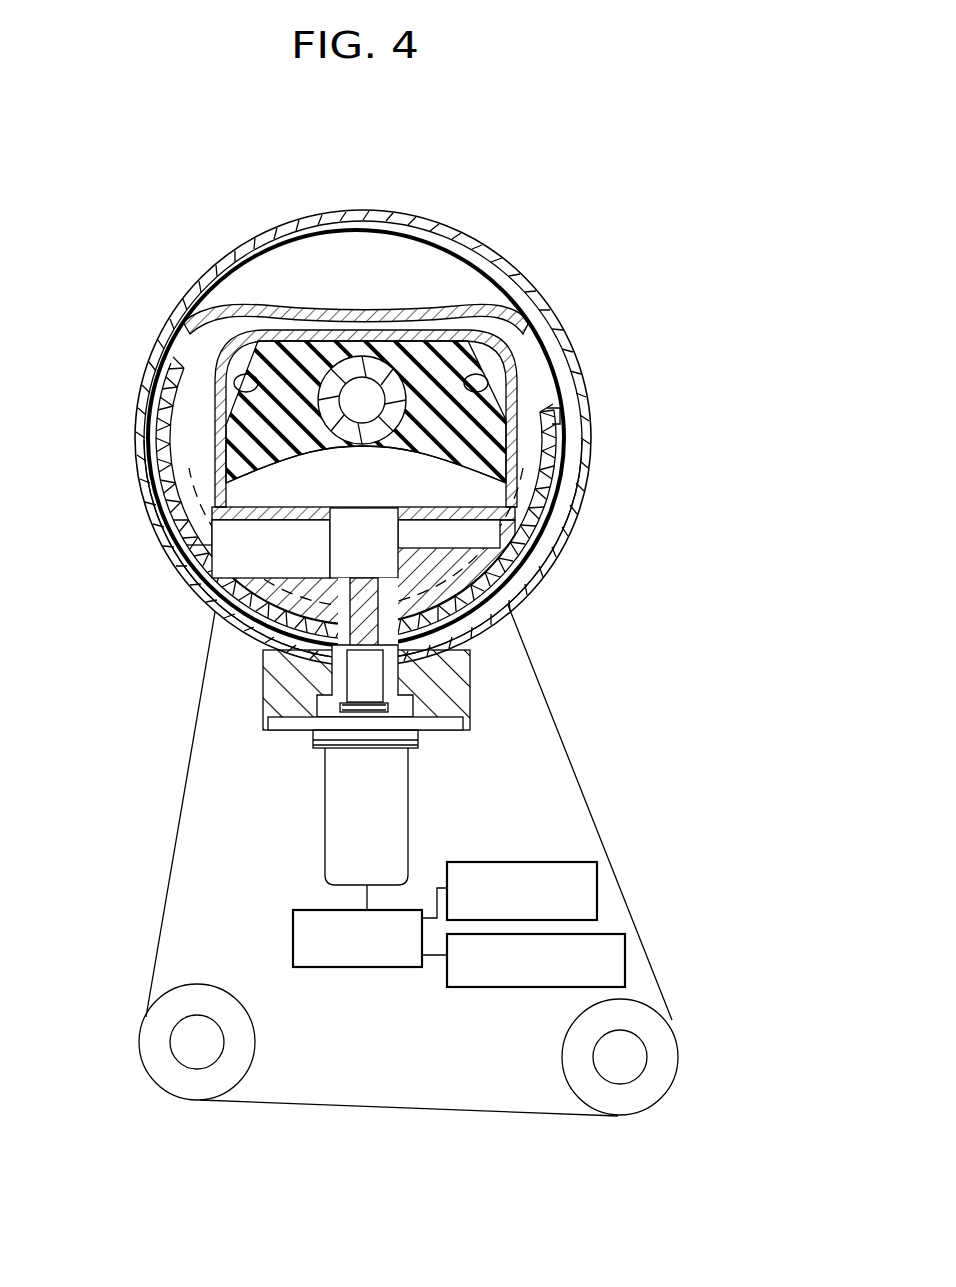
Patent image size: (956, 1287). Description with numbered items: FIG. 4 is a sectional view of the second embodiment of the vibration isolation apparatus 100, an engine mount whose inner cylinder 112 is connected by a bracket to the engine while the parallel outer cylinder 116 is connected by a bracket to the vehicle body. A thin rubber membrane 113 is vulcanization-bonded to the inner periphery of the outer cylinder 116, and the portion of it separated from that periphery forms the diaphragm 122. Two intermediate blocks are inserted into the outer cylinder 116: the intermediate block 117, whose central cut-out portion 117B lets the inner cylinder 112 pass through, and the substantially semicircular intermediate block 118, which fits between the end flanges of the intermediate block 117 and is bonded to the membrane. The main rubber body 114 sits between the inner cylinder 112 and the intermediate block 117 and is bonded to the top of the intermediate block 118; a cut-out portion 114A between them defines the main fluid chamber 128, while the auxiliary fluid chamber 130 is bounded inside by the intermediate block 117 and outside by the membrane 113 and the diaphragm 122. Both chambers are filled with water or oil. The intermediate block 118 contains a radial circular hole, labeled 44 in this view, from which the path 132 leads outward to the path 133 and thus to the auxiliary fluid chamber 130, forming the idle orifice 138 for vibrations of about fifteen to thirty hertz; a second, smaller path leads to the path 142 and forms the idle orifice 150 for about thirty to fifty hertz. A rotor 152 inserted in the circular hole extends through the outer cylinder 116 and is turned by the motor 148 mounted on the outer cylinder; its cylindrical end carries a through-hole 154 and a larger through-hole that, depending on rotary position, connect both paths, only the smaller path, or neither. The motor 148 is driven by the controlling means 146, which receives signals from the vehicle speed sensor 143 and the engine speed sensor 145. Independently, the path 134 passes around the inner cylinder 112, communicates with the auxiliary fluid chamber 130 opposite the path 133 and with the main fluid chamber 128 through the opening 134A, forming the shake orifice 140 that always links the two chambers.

The vibration isolation apparatus 100 is at (550, 232).
The inner cylinder 112 is at (225, 410).
The thin rubber membrane 113 is at (555, 420).
The main rubber body 114 is at (300, 452).
The cut-out portion 114A is at (438, 456).
The outer cylinder 116 is at (572, 395).
The intermediate block 117 is at (500, 357).
The cut-out portion 117B is at (238, 378).
The intermediate block 118 is at (520, 540).
The diaphragm 122 is at (280, 303).
The main fluid chamber 128 is at (381, 484).
The auxiliary fluid chamber 130 is at (503, 326).
The path 132 is at (330, 561).
The path 133 is at (178, 467).
The path 134 is at (560, 577).
The opening 134A is at (205, 508).
The idle orifice 138 is at (200, 543).
The shake orifice 140 is at (530, 607).
The path 142 is at (530, 490).
The vehicle speed sensor 143 is at (512, 862).
The engine speed sensor 145 is at (517, 987).
The controlling means 146 is at (365, 968).
The motor 148 is at (398, 768).
The idle orifice 150 is at (495, 535).
The rotor 152 is at (218, 625).
The through-hole 154 is at (218, 628).
The actuator rod 44 is at (350, 566).